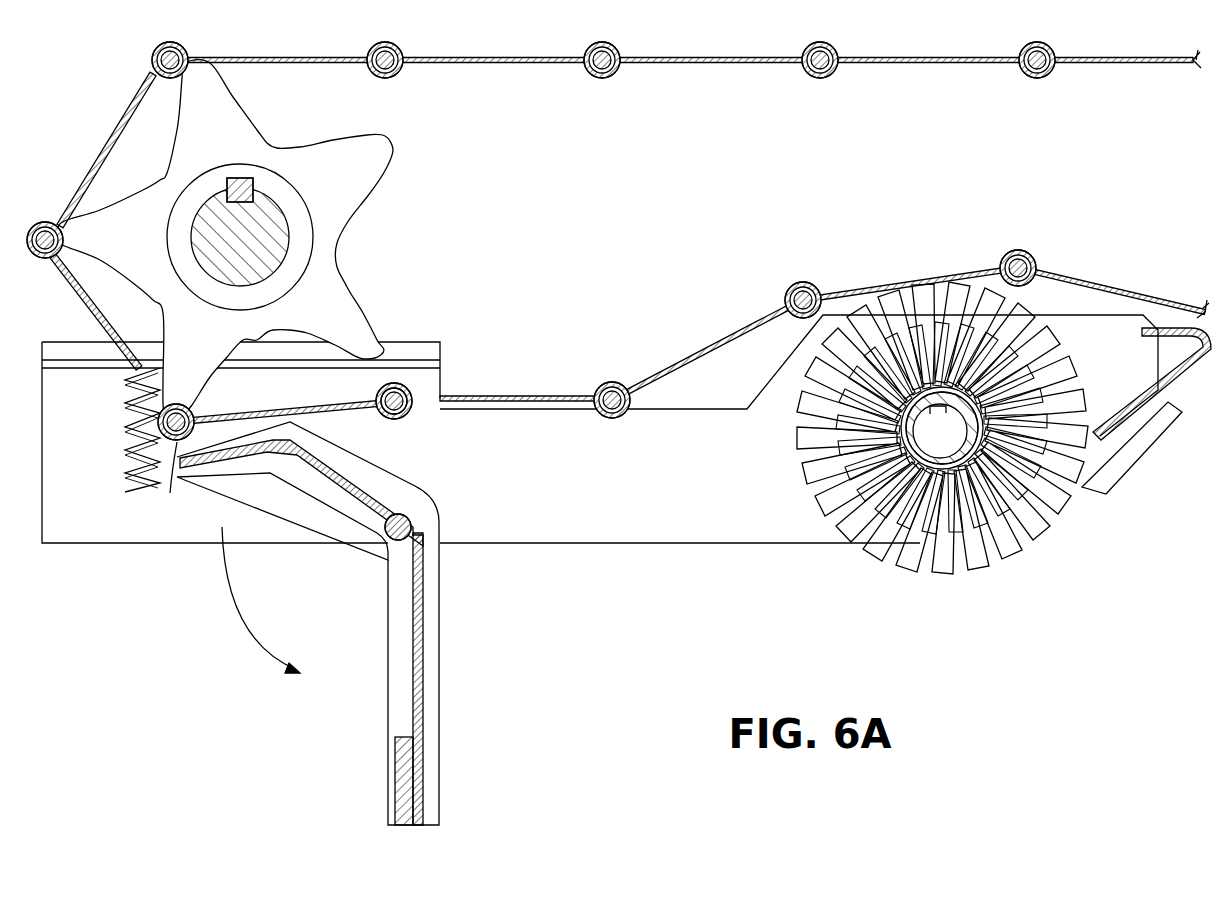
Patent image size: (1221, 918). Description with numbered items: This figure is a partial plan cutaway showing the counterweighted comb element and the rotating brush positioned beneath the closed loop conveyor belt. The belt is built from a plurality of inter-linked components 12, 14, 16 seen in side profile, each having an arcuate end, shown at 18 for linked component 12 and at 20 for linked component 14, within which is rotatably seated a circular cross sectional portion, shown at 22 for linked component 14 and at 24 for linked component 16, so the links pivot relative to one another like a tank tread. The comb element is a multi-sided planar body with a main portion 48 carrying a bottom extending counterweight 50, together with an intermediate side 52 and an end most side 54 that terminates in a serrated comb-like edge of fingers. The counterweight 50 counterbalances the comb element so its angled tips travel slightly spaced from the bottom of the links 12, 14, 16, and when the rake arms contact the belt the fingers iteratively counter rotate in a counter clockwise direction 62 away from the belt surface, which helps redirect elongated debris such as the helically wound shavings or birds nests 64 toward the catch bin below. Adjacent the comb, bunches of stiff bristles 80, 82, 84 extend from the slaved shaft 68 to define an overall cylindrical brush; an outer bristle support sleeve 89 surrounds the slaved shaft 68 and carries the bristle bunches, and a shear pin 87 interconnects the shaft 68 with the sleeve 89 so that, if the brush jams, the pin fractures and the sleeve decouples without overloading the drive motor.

The linked component 12 is at (475, 393).
The linked component 14 is at (295, 403).
The linked component 16 is at (78, 309).
The arcuate end 18 is at (400, 385).
The arcuate end 20 is at (200, 410).
The circular cross sectional portion 22 is at (405, 418).
The circular cross sectional portion 24 is at (172, 478).
The main portion 48 is at (385, 690).
The counterweight 50 is at (398, 780).
The intermediate side 52 is at (322, 487).
The end most side 54 is at (217, 477).
The counter clockwise direction 62 is at (222, 585).
The elongated debris particles 64 is at (125, 421).
The slaved shaft 68 is at (850, 488).
The bunch of stiff bristles 80 is at (860, 550).
The bunch of stiff bristles 82 is at (890, 566).
The bunch of stiff bristles 84 is at (925, 574).
The shear pin 87 is at (934, 410).
The outer bristle support sleeve 89 is at (905, 450).